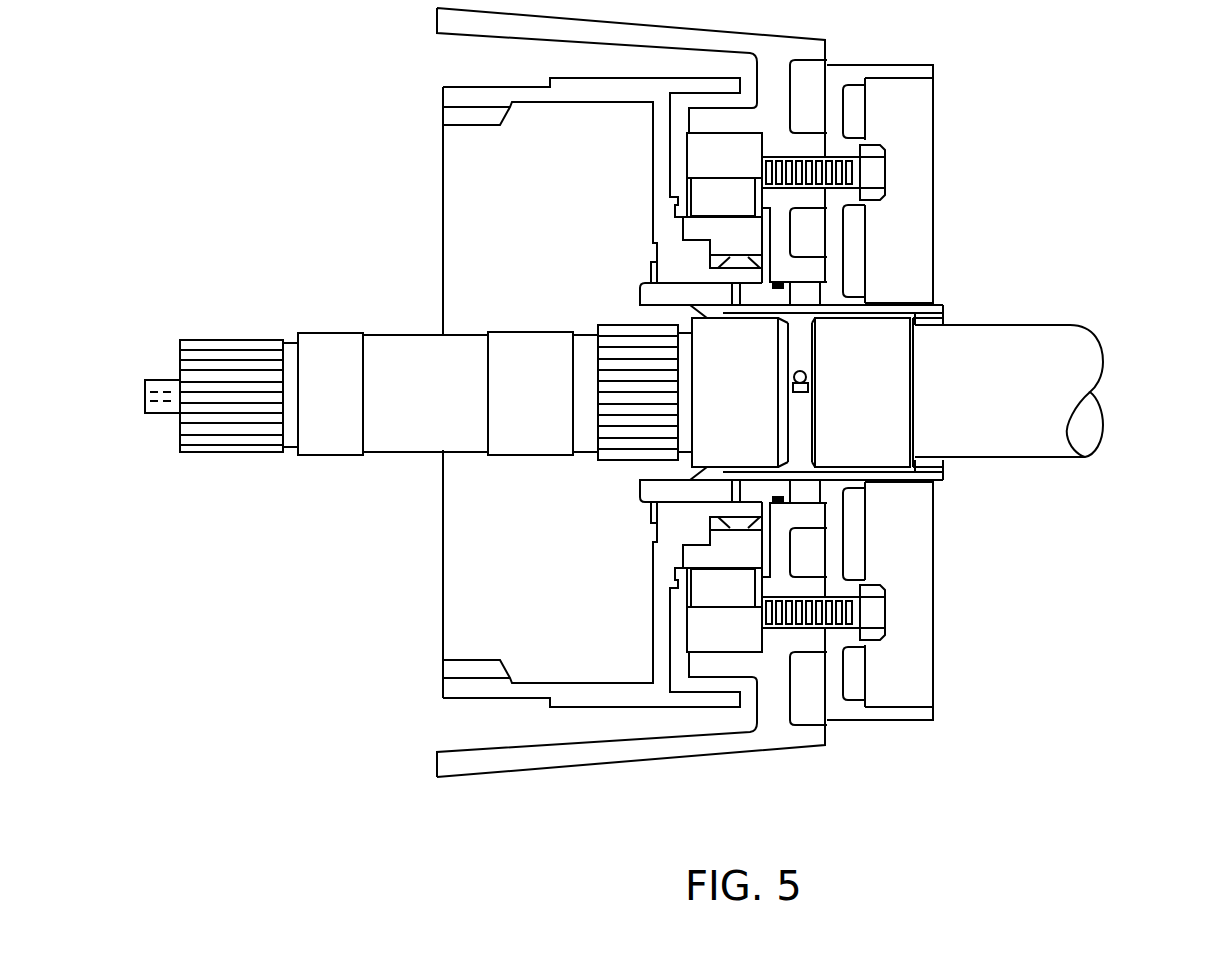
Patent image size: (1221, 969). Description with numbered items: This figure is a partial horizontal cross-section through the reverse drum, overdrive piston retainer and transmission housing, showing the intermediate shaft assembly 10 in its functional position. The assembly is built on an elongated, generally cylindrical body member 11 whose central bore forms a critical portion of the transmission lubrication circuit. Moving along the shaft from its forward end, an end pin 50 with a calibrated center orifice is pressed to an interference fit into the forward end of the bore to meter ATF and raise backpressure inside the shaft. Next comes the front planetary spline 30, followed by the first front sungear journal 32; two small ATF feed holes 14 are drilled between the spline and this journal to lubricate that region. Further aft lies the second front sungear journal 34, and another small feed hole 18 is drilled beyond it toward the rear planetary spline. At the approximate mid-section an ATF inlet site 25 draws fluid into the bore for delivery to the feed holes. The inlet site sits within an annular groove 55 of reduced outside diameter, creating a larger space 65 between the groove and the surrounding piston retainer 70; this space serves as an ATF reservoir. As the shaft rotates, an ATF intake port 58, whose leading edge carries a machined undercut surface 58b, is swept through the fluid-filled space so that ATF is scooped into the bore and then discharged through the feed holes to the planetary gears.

The intermediate shaft assembly 10 is at (1097, 310).
The body member 11 is at (1023, 399).
The ATF feed holes 14 is at (292, 392).
The feed hole 18 is at (587, 393).
The ATF inlet site 25 is at (789, 364).
The front planetary spline 30 is at (237, 340).
The first front sungear journal 32 is at (353, 404).
The second front sungear journal 34 is at (549, 404).
The end pin 50 is at (163, 378).
The annular groove 55 is at (797, 440).
The ATF intake port 58 is at (793, 378).
The undercut surface 58b is at (802, 392).
The space 65 is at (800, 320).
The piston retainer 70 is at (837, 298).